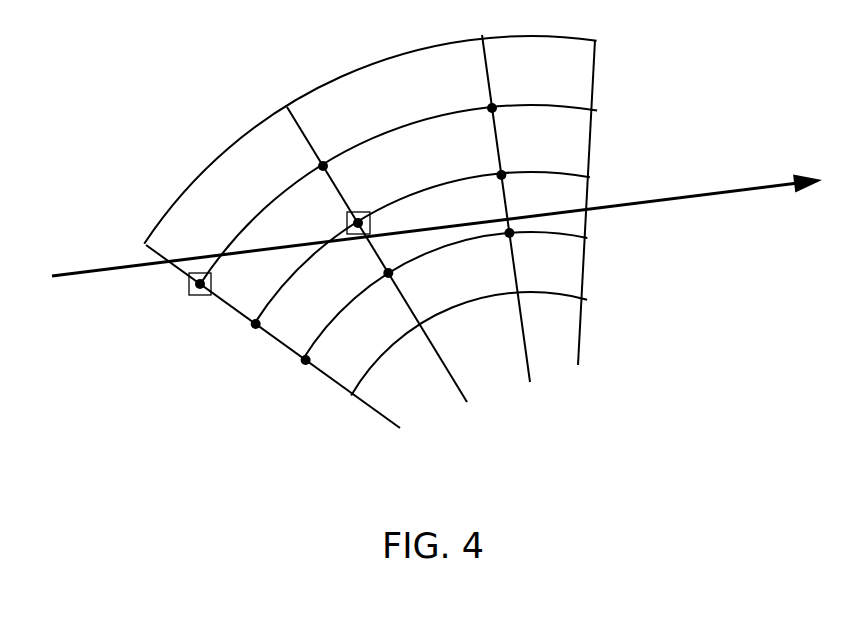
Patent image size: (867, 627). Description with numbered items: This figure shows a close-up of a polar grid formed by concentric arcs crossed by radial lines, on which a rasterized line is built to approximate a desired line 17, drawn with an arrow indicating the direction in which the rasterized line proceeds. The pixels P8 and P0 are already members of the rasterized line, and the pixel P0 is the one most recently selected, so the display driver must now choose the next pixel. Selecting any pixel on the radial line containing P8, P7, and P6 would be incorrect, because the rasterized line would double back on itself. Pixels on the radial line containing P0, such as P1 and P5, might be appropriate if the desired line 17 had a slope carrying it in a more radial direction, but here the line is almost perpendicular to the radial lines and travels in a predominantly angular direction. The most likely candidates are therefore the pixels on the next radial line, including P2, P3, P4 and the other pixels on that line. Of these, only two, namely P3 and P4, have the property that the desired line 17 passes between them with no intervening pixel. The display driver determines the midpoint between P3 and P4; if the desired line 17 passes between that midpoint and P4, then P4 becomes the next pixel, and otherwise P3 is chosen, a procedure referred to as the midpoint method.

The desired line 17 is at (724, 188).
The most recently selected pixel P0 is at (361, 212).
The pixel on radial line containing P0 P1 is at (325, 163).
The pixel on next radial line P2 is at (495, 107).
The first candidate pixel P3 is at (504, 175).
The second candidate pixel P4 is at (512, 235).
The pixel on radial line containing P0 P5 is at (392, 274).
The pixel on radial line containing P8 P6 is at (303, 362).
The pixel on radial line containing P8 P7 is at (253, 326).
The previously selected pixel P8 is at (190, 292).